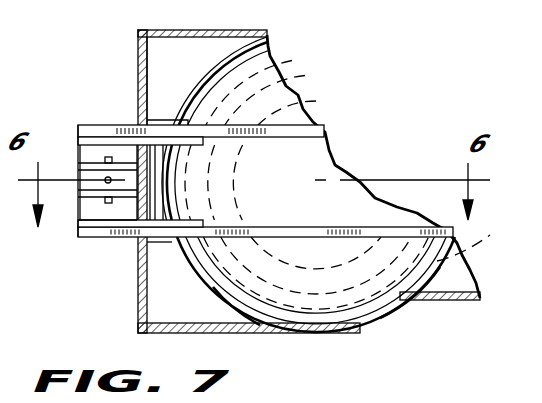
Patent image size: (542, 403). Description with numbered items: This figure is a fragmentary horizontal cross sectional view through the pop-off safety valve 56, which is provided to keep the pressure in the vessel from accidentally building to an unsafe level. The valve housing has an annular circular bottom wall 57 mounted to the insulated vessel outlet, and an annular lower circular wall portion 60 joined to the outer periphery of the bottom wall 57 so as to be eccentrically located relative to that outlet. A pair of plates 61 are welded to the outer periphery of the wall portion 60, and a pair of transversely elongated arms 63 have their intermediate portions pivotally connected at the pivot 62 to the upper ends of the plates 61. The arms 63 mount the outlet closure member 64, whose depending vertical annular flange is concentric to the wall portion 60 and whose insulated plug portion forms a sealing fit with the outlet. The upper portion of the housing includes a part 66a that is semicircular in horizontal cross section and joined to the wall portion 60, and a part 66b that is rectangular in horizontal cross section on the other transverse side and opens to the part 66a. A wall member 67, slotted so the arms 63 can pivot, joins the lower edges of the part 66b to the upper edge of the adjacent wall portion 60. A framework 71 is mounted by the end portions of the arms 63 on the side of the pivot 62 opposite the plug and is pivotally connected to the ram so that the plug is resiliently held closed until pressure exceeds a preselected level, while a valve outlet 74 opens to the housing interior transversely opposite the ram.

The safety valve 56 is at (330, 110).
The annular circular bottom wall 57 is at (260, 50).
The annular lower circular wall portion 60 is at (477, 234).
The plates 61 is at (165, 118).
The pivot 62 is at (155, 188).
The transversely elongated arms 63 is at (290, 228).
The outlet closure member 64 is at (333, 160).
The semicircular housing part 66a is at (378, 315).
The rectangular housing part 66b is at (213, 332).
The wall member 67 is at (173, 285).
The framework 71 is at (100, 200).
The valve outlet 74 is at (430, 300).